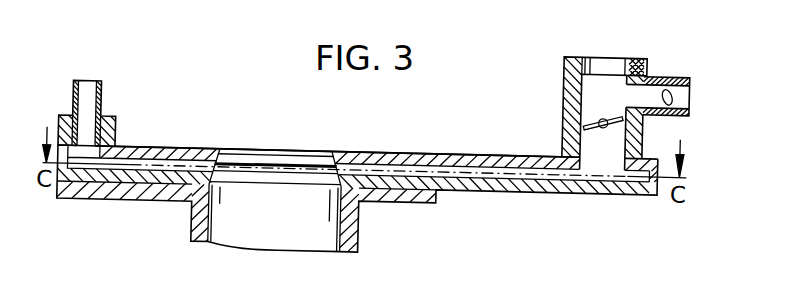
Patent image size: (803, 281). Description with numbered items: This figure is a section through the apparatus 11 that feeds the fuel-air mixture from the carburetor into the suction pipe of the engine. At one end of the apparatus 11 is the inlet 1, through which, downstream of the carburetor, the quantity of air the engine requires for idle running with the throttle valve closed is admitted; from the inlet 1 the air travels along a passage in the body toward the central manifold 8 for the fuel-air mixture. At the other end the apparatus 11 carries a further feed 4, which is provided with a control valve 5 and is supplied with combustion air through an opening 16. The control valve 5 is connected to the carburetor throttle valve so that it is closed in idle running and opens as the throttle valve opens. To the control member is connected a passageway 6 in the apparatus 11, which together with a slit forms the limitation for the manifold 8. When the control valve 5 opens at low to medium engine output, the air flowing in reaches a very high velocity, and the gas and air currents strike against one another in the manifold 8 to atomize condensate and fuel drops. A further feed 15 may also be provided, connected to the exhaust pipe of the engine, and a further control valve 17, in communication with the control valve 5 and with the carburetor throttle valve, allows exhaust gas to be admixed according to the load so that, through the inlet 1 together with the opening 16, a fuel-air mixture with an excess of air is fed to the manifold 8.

The inlet 1 is at (90, 92).
The further feed 4 is at (617, 89).
The control valve 5 is at (559, 86).
The passageway 6 is at (477, 147).
The manifold 8 is at (266, 153).
The apparatus 11 is at (406, 145).
The further feed 15 is at (677, 90).
The opening 16 is at (611, 57).
The further control valve 17 is at (666, 75).